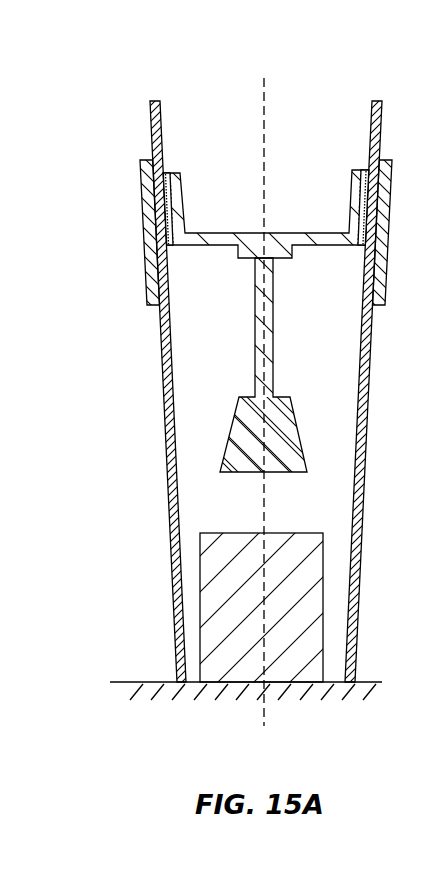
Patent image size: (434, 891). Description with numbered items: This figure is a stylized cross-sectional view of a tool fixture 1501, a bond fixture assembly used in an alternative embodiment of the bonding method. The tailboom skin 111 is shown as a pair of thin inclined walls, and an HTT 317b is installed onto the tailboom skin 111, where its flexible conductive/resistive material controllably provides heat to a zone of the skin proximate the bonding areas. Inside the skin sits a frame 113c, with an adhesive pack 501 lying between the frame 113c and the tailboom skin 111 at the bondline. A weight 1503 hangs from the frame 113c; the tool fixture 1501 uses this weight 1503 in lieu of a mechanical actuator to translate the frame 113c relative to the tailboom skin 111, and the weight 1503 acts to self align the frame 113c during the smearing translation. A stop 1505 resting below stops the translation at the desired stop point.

The tool fixture 1501 is at (134, 82).
The tailboom skin 111 is at (164, 381).
The HTT 317b is at (146, 247).
The adhesive pack 501 is at (168, 174).
The frame 113c is at (185, 215).
The weight 1503 is at (291, 448).
The stop 1505 is at (291, 618).